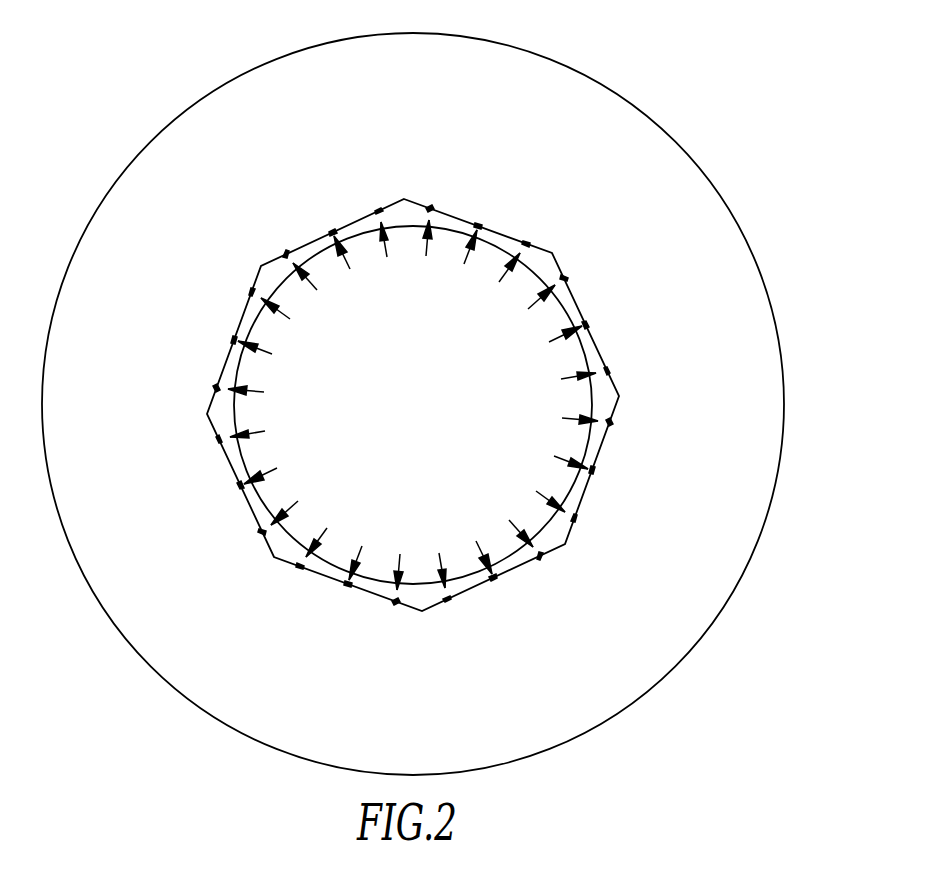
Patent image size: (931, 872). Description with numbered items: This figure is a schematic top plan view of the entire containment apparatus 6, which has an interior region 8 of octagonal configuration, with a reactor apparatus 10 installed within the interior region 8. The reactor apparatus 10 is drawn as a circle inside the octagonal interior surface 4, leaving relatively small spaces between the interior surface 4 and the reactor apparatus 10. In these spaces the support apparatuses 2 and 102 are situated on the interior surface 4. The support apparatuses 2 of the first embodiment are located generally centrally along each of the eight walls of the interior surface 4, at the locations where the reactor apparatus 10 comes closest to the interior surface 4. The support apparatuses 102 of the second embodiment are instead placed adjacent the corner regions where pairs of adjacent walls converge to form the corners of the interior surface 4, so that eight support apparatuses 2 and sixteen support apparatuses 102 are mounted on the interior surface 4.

The support apparatus 2 is at (464, 264).
The support apparatus 102 is at (387, 257).
The interior surface 4 is at (450, 212).
The containment apparatus 6 is at (567, 65).
The interior region 8 is at (544, 263).
The reactor apparatus 10 is at (307, 262).